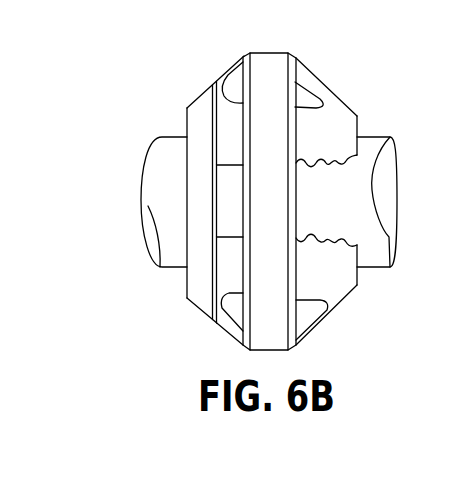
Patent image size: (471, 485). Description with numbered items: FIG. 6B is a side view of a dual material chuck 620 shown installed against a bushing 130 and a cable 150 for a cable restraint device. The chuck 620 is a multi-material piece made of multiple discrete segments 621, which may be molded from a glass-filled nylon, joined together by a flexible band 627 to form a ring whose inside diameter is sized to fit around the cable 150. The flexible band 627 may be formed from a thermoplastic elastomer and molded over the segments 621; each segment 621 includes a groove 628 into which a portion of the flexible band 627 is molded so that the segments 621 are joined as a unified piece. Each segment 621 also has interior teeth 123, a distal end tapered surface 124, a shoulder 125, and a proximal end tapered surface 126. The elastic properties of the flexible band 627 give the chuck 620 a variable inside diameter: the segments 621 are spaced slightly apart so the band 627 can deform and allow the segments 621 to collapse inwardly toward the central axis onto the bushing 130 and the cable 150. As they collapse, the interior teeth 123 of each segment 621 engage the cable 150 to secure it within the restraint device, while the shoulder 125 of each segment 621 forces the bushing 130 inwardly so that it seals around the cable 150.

The chuck 620 is at (225, 339).
The segment 621 is at (207, 78).
The flexible band 627 is at (266, 50).
The groove 628 is at (324, 74).
The proximal end tapered surface 126 is at (236, 73).
The bushing 130 is at (195, 292).
The shoulder 125 is at (224, 176).
The distal end tapered surface 124 is at (356, 111).
The interior teeth 123 is at (340, 167).
The cable 150 is at (160, 208).